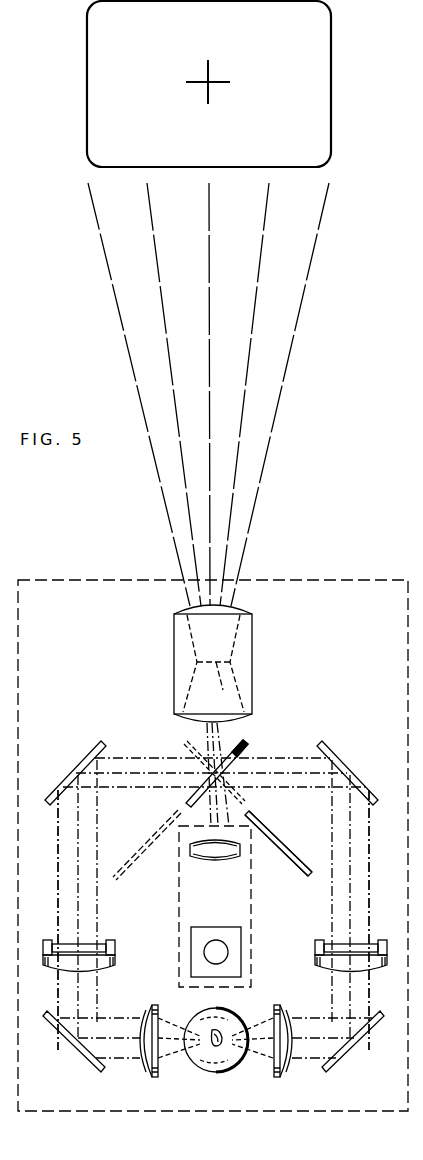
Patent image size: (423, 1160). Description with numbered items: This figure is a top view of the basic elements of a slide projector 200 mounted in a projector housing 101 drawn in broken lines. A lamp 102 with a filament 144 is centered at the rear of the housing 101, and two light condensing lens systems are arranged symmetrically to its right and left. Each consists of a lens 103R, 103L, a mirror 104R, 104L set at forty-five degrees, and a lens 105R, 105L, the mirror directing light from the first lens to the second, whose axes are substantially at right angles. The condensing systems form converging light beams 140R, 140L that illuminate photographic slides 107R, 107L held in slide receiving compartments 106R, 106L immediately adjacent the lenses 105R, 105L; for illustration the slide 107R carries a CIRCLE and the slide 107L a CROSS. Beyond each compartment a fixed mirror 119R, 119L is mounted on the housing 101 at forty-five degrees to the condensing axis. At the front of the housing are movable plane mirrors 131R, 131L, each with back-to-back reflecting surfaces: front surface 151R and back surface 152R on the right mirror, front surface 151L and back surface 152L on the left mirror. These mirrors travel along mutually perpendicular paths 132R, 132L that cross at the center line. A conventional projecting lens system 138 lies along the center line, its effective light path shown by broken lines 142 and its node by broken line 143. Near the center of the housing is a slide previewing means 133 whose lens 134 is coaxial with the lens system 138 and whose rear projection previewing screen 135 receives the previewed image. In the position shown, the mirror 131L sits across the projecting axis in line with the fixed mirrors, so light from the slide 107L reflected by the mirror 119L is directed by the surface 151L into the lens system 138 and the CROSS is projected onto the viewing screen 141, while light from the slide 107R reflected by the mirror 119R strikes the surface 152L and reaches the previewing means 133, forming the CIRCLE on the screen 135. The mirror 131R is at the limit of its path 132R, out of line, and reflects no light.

The viewing screen 141 is at (100, 82).
The slide projector 200 is at (311, 570).
The projector housing 101 is at (107, 580).
The effective light path 142 is at (190, 637).
The node 143 is at (213, 663).
The projecting lens system 138 is at (258, 658).
The fixed mirror 119L is at (80, 760).
The fixed mirror 119R is at (346, 762).
The plane mirror 131L is at (247, 742).
The back reflecting surface 152L is at (240, 762).
The path of travel 132R is at (246, 797).
The front reflecting surface 151L is at (190, 799).
The path of travel 132L is at (170, 814).
The plane mirror 131R is at (312, 866).
The front reflecting surface 151R is at (265, 826).
The back reflecting surface 152R is at (306, 872).
The slide previewing means 133 is at (178, 868).
The lens 134 is at (222, 861).
The rear projection previewing screen 135 is at (220, 926).
The converging light beam 140L is at (82, 893).
The converging light beam 140R is at (348, 889).
The photographic slide 107L is at (88, 942).
The photographic slide 107R is at (340, 942).
The slide receiving compartment 106L is at (112, 945).
The slide receiving compartment 106R is at (318, 945).
The lens 105L is at (115, 962).
The lens 105R is at (315, 962).
The mirror 104L is at (80, 1046).
The mirror 104R is at (349, 1046).
The lens 103L is at (154, 1078).
The lens 103R is at (282, 1078).
The lamp 102 is at (243, 1017).
The filament 144 is at (212, 1046).